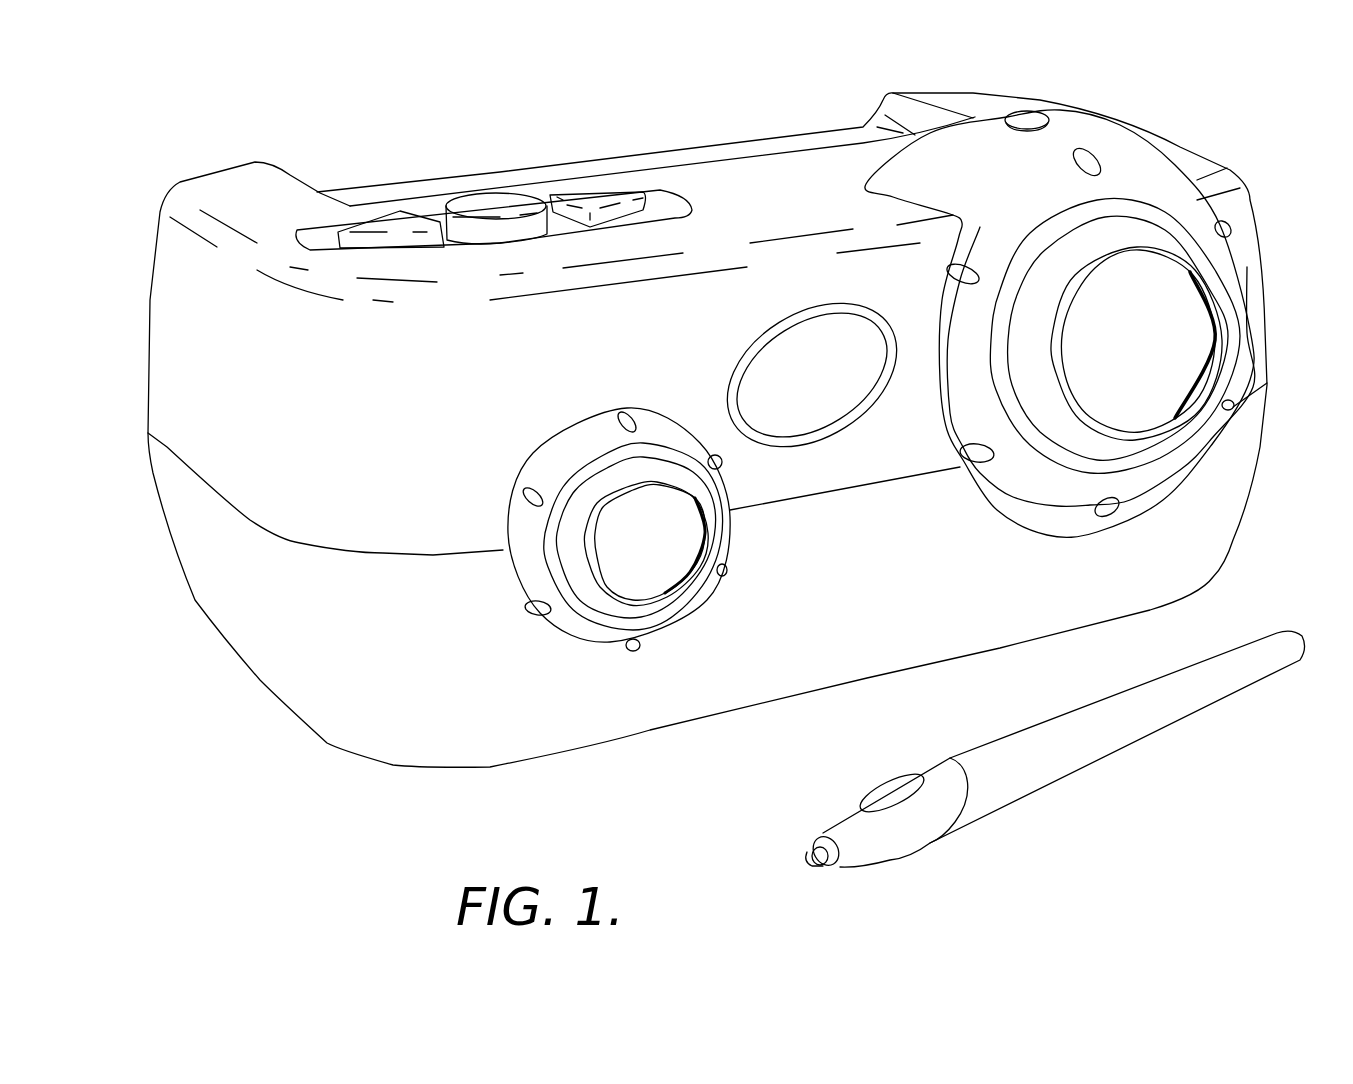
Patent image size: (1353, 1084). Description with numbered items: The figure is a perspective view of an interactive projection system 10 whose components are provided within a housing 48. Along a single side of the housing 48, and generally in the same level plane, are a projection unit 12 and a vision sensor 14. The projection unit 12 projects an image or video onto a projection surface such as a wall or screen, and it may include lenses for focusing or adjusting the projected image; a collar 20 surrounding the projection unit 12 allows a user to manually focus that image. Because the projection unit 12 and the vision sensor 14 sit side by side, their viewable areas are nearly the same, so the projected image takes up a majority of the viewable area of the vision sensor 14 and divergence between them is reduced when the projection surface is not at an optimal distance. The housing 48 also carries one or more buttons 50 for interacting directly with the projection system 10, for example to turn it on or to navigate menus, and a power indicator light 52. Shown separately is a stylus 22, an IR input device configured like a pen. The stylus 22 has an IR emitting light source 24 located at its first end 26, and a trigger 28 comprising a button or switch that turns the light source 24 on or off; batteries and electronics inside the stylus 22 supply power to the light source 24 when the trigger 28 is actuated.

The interactive projection system 10 is at (198, 755).
The projection unit 12 is at (1183, 333).
The vision sensor 14 is at (600, 573).
The collar 20 is at (1240, 268).
The stylus 22 is at (1063, 777).
The IR emitting light source 24 is at (808, 855).
The first end 26 is at (812, 795).
The trigger 28 is at (893, 783).
The housing 48 is at (163, 474).
The buttons 50 is at (390, 222).
The power indicator light 52 is at (1023, 113).